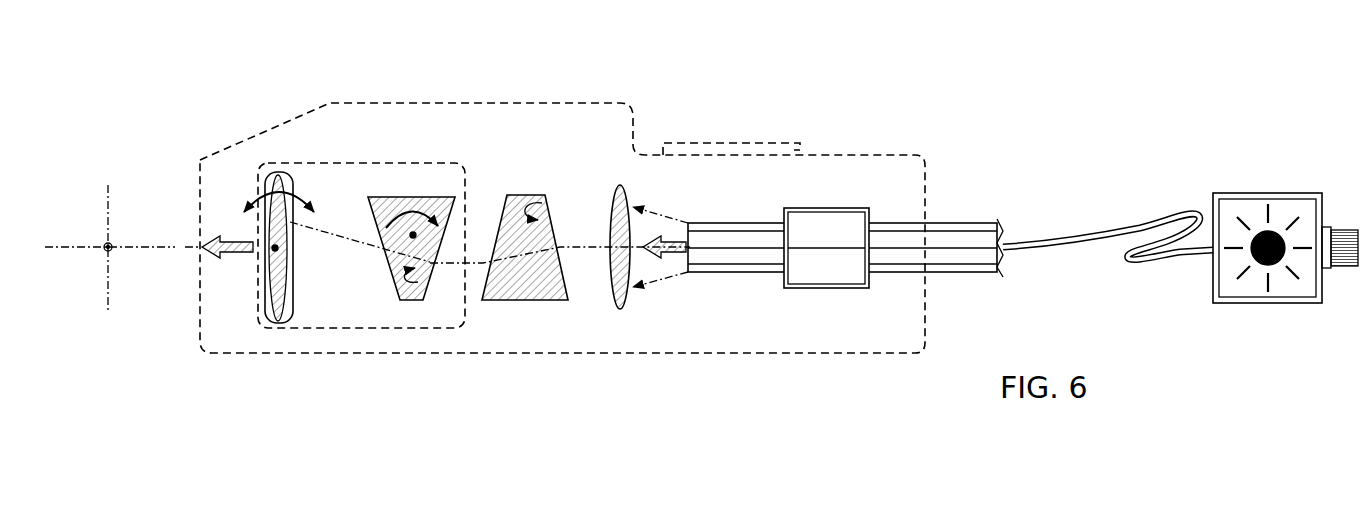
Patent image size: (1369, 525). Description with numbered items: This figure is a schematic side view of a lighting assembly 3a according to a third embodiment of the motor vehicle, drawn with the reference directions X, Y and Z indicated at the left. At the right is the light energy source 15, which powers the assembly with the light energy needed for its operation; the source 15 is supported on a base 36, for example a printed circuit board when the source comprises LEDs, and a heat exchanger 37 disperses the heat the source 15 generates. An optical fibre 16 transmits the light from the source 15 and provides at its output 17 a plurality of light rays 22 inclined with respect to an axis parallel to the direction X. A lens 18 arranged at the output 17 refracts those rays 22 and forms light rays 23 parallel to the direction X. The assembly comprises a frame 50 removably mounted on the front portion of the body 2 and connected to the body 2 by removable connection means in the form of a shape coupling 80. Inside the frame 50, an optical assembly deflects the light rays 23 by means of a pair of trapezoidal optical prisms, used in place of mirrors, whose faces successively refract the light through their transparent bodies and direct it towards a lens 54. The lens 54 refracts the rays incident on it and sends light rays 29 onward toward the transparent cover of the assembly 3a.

The body 2 is at (888, 133).
The assembly 3a is at (662, 112).
The light energy source 15 is at (1288, 207).
The optical fibre 16 is at (822, 204).
The output 17 is at (686, 224).
The lens 18 is at (634, 292).
The light rays 22 is at (662, 287).
The light rays 23 is at (560, 236).
The light rays 29 is at (240, 242).
The base 36 is at (1318, 303).
The heat exchanger 37 is at (1330, 232).
The frame 50 is at (455, 360).
The lens 54 is at (275, 290).
The shape coupling 80 is at (732, 125).
The direction X is at (80, 258).
The direction Y is at (118, 256).
The direction Z is at (115, 213).